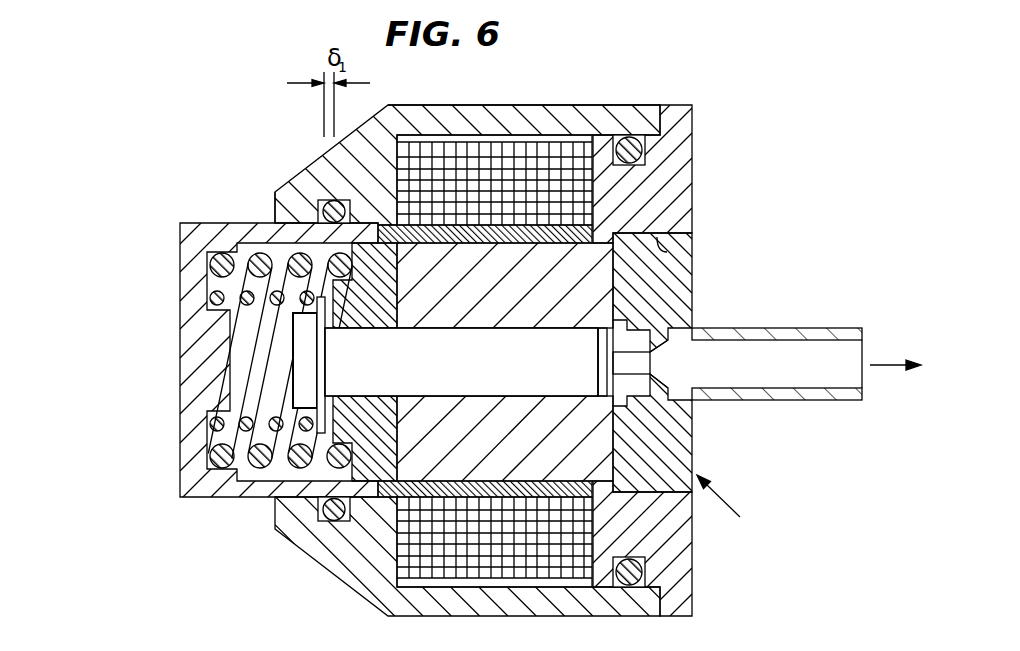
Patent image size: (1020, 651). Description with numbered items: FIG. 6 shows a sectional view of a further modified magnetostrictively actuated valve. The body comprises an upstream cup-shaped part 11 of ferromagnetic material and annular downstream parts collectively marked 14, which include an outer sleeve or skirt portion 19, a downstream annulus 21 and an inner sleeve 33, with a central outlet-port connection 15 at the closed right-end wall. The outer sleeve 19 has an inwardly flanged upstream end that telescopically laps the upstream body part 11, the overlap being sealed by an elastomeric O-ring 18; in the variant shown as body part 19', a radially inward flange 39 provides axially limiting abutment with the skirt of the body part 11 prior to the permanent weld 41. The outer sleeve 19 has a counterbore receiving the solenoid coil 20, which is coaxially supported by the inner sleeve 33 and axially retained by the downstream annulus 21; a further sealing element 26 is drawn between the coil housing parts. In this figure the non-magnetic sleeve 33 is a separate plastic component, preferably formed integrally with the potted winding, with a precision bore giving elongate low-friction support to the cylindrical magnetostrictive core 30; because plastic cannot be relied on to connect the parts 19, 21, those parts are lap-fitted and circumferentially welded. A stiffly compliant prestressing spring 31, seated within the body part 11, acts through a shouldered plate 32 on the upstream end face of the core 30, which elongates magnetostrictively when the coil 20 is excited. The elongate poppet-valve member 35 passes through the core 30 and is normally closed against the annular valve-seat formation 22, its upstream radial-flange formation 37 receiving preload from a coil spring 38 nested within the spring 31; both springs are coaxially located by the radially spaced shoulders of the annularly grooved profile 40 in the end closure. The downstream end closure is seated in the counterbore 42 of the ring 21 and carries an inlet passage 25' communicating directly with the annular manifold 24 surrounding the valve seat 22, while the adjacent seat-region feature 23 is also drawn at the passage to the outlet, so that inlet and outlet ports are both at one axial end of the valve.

The upstream cup-shaped body part 11 is at (217, 222).
The annular downstream body parts 14 is at (578, 94).
The outlet-port connection 15 is at (795, 353).
The elastomeric O-ring 18 is at (327, 203).
The outer sleeve or skirt portion 19 is at (467, 341).
The body part with inward flange 19' is at (275, 164).
The solenoid coil 20 is at (518, 155).
The downstream annulus 21 is at (682, 207).
The annular valve-seat formation 22 is at (615, 362).
The valve seat 23 is at (640, 383).
The annular manifold 24 is at (620, 330).
The inlet passage 25' is at (677, 529).
The sealing ring 26 is at (635, 140).
The magnetostrictive core 30 is at (525, 287).
The prestressing spring 31 is at (210, 262).
The shouldered plate 32 is at (358, 407).
The inner sleeve 33 is at (458, 243).
The poppet-valve member 35 is at (447, 374).
The radial-flange formation 37 is at (315, 396).
The coil spring 38 is at (215, 432).
The radially inward flange 39 is at (380, 277).
The annularly grooved profile 40 is at (212, 298).
The weld 41 is at (270, 222).
The counterbore 42 is at (667, 252).